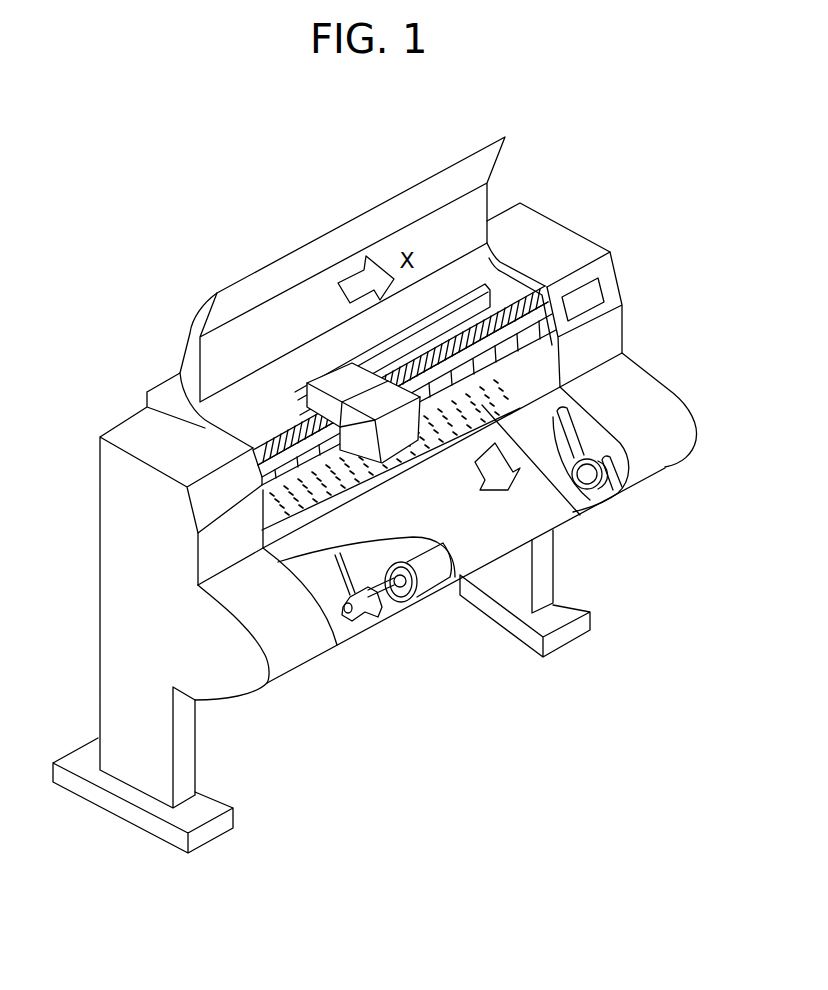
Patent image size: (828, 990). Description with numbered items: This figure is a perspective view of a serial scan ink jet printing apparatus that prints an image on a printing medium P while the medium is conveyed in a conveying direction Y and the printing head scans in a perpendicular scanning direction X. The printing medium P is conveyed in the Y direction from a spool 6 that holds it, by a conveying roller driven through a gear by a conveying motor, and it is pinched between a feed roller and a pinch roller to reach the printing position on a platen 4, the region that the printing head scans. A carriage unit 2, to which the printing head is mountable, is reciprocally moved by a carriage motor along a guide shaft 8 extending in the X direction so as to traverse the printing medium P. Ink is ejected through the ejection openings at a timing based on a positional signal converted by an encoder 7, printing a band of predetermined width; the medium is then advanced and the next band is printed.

The carriage unit 2 is at (343, 380).
The platen 4 is at (580, 513).
The spool 6 is at (430, 572).
The encoder 7 is at (297, 427).
The guide shaft 8 is at (268, 440).
The printing medium P is at (530, 527).